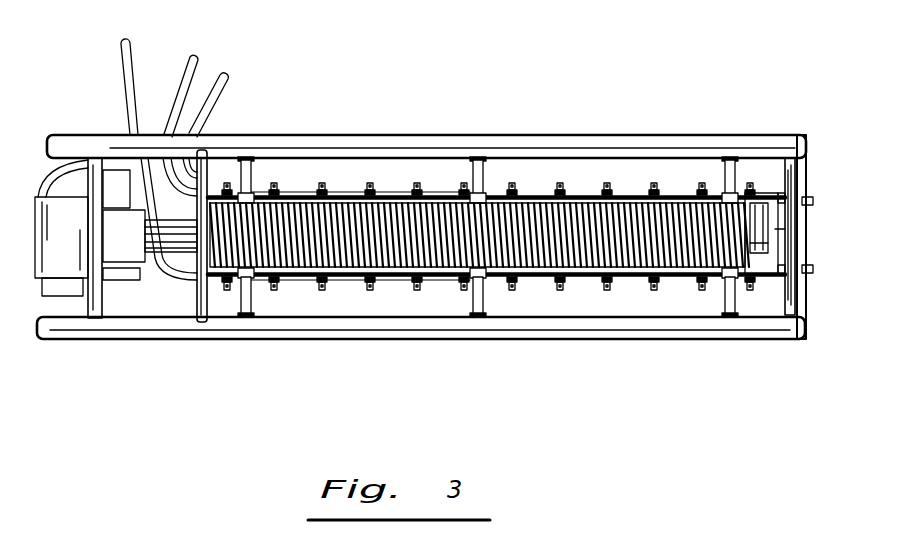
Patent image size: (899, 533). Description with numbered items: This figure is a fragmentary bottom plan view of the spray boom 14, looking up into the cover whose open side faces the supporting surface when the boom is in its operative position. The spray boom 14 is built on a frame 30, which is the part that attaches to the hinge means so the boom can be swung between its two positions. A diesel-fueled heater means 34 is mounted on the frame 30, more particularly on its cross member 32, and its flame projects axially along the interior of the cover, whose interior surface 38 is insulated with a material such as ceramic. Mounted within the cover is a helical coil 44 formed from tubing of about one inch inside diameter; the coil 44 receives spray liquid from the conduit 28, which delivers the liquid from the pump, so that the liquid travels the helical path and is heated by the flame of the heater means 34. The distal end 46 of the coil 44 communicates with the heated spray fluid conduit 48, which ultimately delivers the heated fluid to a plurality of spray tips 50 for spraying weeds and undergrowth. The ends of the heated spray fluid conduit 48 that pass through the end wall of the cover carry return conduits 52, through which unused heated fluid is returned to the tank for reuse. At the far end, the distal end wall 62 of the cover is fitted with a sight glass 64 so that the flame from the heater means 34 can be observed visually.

The spray boom 14 is at (423, 72).
The conduit 28 is at (219, 100).
The frame 30 is at (603, 134).
The cross member 32 is at (103, 297).
The heater means 34 is at (31, 150).
The interior surface 38 is at (662, 167).
The helical coil 44 is at (400, 243).
The distal end 46 is at (763, 280).
The heated spray fluid conduit 48 is at (347, 195).
The spray tips 50 is at (558, 183).
The return conduits 52 is at (180, 81).
The distal end wall 62 is at (803, 292).
The sight glass 64 is at (790, 230).